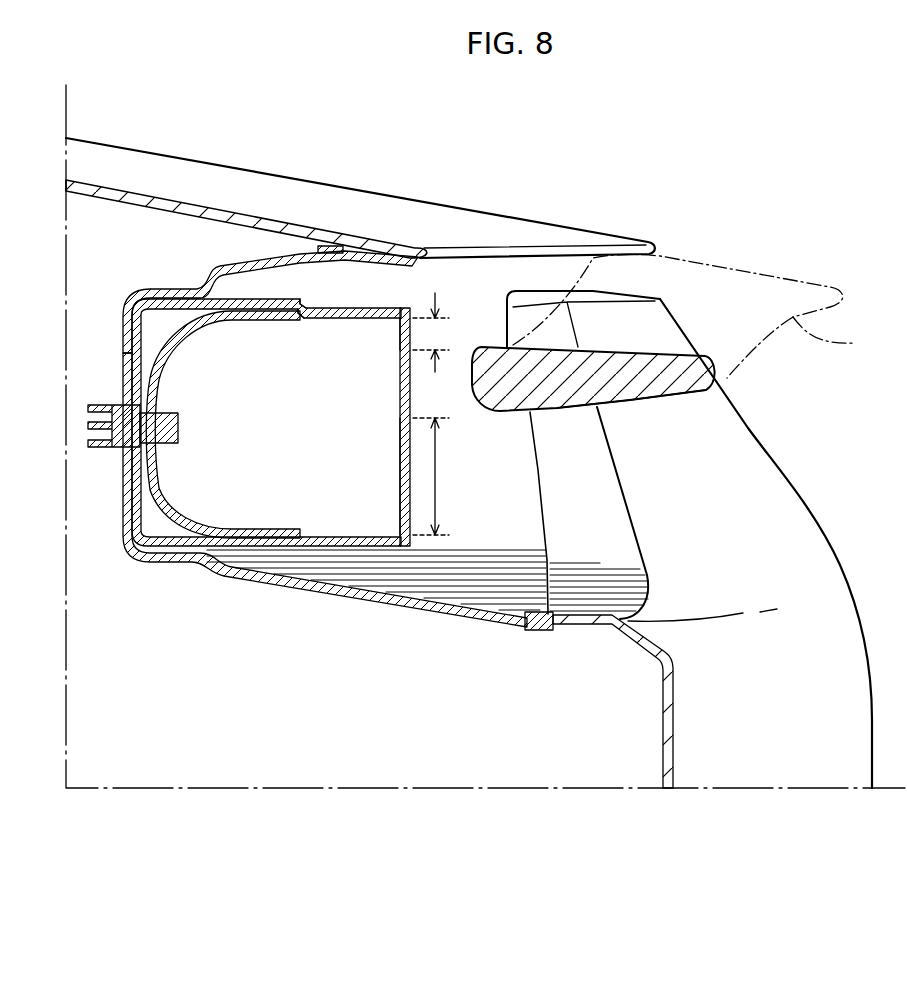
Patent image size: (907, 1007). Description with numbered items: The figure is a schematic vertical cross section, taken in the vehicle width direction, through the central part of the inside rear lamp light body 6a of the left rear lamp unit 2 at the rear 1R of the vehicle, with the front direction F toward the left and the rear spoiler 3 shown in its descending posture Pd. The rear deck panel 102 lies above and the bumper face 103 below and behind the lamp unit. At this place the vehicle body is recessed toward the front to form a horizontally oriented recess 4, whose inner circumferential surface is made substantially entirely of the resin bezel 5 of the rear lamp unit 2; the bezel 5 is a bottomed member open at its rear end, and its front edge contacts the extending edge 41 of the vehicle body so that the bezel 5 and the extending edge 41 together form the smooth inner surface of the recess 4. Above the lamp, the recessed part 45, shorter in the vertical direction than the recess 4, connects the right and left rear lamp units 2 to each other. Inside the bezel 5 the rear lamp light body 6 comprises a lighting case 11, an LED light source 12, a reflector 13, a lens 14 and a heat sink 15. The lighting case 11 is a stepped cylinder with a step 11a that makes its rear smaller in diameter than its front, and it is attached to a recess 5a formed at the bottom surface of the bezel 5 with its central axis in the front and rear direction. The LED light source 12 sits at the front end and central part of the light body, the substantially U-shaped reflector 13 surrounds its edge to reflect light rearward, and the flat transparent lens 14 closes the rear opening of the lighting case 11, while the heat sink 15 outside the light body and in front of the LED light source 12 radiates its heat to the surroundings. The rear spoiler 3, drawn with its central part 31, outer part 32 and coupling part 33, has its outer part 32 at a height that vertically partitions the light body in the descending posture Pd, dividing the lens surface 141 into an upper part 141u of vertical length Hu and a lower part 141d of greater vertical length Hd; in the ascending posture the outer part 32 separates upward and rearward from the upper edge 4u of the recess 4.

The rear of the vehicle 1R is at (486, 157).
The rear lamp unit 2 is at (638, 496).
The rear spoiler 3 is at (697, 340).
The central part 31 is at (727, 262).
The outer part 32 is at (656, 396).
The coupling part 33 is at (804, 347).
The recess 4 is at (622, 531).
The upper edge of the recess 4u is at (432, 250).
The extending edge 41 is at (583, 624).
The recessed part 45 is at (522, 289).
The bezel 5 is at (371, 603).
The recess of the bezel 5a is at (166, 298).
The rear lamp light body 6 is at (585, 397).
The inside rear lamp light body 6a is at (465, 448).
The lighting case 11 is at (361, 308).
The step 11a is at (310, 300).
The LED light source 12 is at (180, 426).
The reflector 13 is at (172, 342).
The lens 14 is at (365, 427).
The lens surface 141 is at (400, 397).
The upper part of the lens surface 141u is at (396, 318).
The lower part of the lens surface 141d is at (378, 401).
The heat sink 15 is at (95, 447).
The rear deck panel 102 is at (417, 201).
The bumper face 103 is at (780, 463).
The front direction F is at (228, 133).
The descending posture Pd is at (790, 252).
The length of the upper part of the lens surface Hu is at (442, 332).
The length of the lower part of the lens surface Hd is at (442, 476).